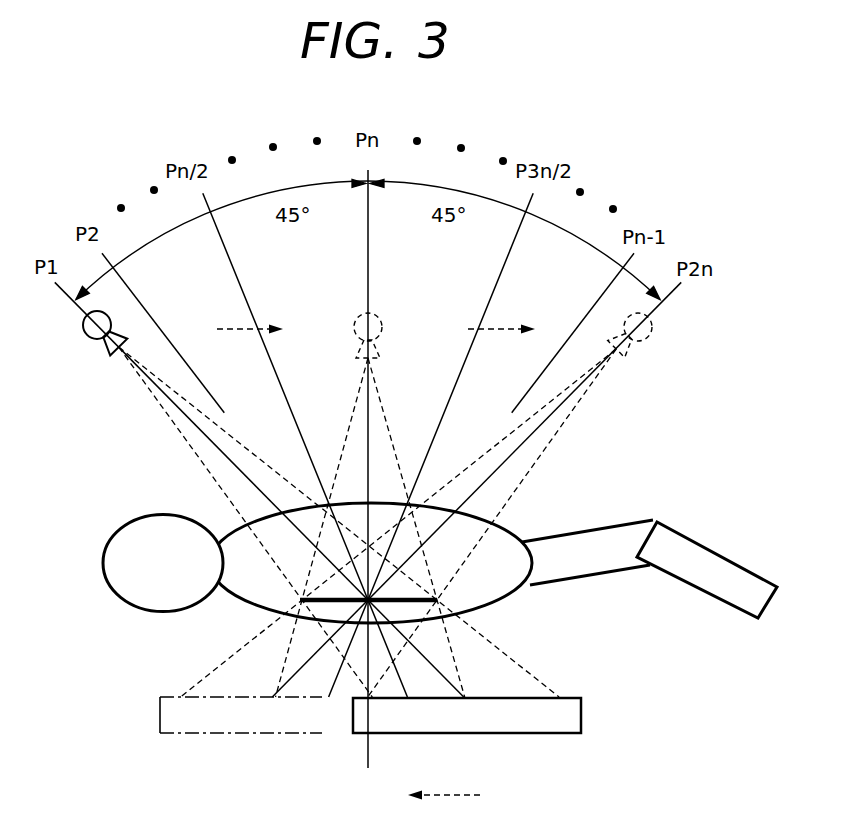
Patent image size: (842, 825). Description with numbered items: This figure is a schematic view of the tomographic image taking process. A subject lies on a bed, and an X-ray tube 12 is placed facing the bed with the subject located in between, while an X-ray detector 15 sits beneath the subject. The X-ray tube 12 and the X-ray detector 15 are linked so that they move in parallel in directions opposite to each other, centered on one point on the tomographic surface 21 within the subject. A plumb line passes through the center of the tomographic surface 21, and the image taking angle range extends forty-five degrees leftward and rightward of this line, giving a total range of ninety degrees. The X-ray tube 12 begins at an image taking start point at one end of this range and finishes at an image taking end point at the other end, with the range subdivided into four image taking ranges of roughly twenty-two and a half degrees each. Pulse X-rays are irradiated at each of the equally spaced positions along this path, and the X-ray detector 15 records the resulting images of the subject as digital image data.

The X-ray tube 12 is at (86, 338).
The X-ray detector 15 is at (581, 712).
The tomographic surface 21 is at (442, 622).